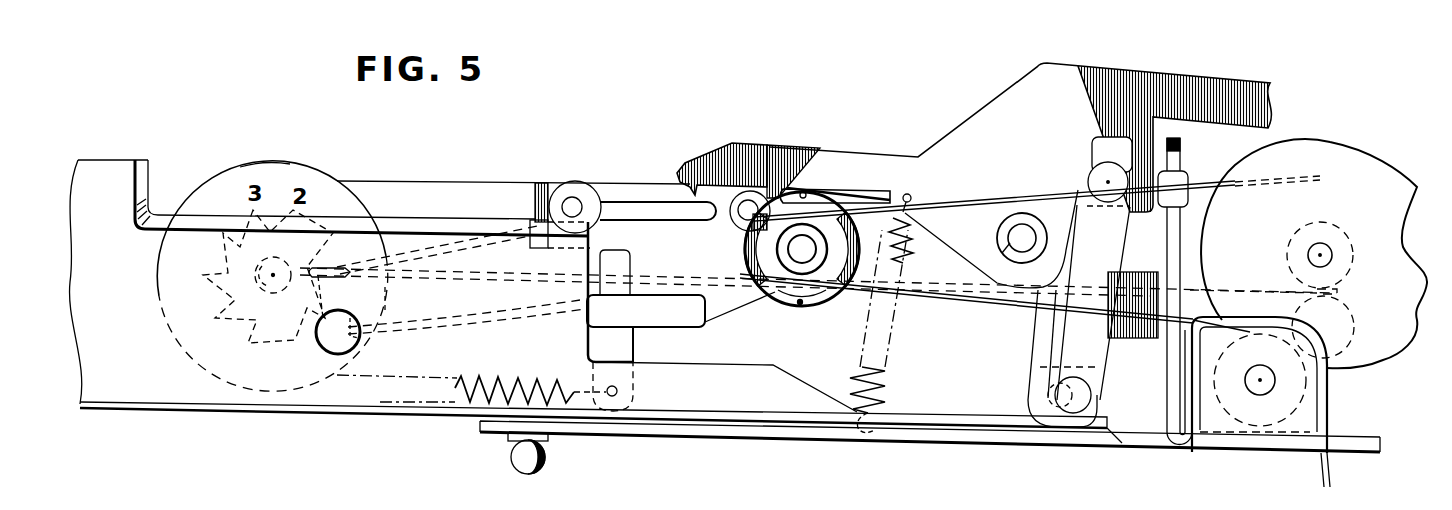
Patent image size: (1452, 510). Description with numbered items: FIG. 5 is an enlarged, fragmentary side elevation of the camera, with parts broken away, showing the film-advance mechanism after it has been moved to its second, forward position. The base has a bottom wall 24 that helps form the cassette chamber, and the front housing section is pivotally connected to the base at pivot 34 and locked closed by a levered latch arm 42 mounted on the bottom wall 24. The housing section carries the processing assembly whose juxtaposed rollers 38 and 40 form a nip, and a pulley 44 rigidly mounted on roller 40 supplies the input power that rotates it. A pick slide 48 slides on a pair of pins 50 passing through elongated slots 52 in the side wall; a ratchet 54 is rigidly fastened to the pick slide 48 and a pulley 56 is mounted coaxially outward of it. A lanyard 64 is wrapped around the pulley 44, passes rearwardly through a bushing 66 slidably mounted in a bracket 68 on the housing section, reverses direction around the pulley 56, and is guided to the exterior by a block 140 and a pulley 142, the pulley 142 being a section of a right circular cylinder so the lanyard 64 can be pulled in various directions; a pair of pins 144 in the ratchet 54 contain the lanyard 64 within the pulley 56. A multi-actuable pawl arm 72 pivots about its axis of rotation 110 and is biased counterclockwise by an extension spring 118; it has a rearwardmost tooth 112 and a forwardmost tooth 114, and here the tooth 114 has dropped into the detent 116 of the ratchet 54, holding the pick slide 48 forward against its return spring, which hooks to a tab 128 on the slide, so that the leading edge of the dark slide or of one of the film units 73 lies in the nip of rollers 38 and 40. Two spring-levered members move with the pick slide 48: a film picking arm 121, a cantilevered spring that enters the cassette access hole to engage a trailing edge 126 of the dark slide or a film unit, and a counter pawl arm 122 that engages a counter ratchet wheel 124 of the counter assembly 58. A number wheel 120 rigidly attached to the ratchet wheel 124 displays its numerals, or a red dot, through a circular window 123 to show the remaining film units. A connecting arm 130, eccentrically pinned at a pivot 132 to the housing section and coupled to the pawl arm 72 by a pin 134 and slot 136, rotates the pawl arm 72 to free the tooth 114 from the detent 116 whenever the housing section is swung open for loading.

The bottom wall 24 is at (350, 418).
The pivot 34 is at (1020, 387).
The roller 38 is at (1355, 320).
The roller 40 is at (1345, 233).
The levered latch arm 42 is at (617, 428).
The pulley 44 is at (1320, 143).
The pick slide 48 is at (540, 183).
The pins 50 is at (577, 188).
The elongated slots 52 is at (622, 203).
The ratchet 54 is at (833, 307).
The pulley 56 is at (777, 297).
The counter assembly 58 is at (293, 163).
The lanyard 64 is at (988, 305).
The bushing 66 is at (1176, 160).
The bracket 68 is at (1184, 183).
The pawl arm 72 is at (995, 107).
The film units 73 is at (955, 277).
The axis of rotation 110 is at (1013, 238).
The rearwardmost tooth 112 is at (681, 168).
The forwardmost tooth 114 is at (800, 183).
The detent 116 is at (778, 150).
The extension spring 118 is at (883, 377).
The number wheel 120 is at (265, 166).
The film picking arm 121 is at (450, 246).
The counter pawl arm 122 is at (480, 322).
The circular window 123 is at (355, 346).
The counter ratchet wheel 124 is at (228, 331).
The trailing edge 126 is at (384, 302).
The tab 128 is at (638, 372).
The connecting arm 130 is at (1103, 267).
The pivot 132 is at (1097, 393).
The pin 134 is at (1103, 182).
The slot 136 is at (1100, 145).
The block 140 is at (1203, 425).
The pulley 142 is at (1260, 450).
The pins 144 is at (800, 306).